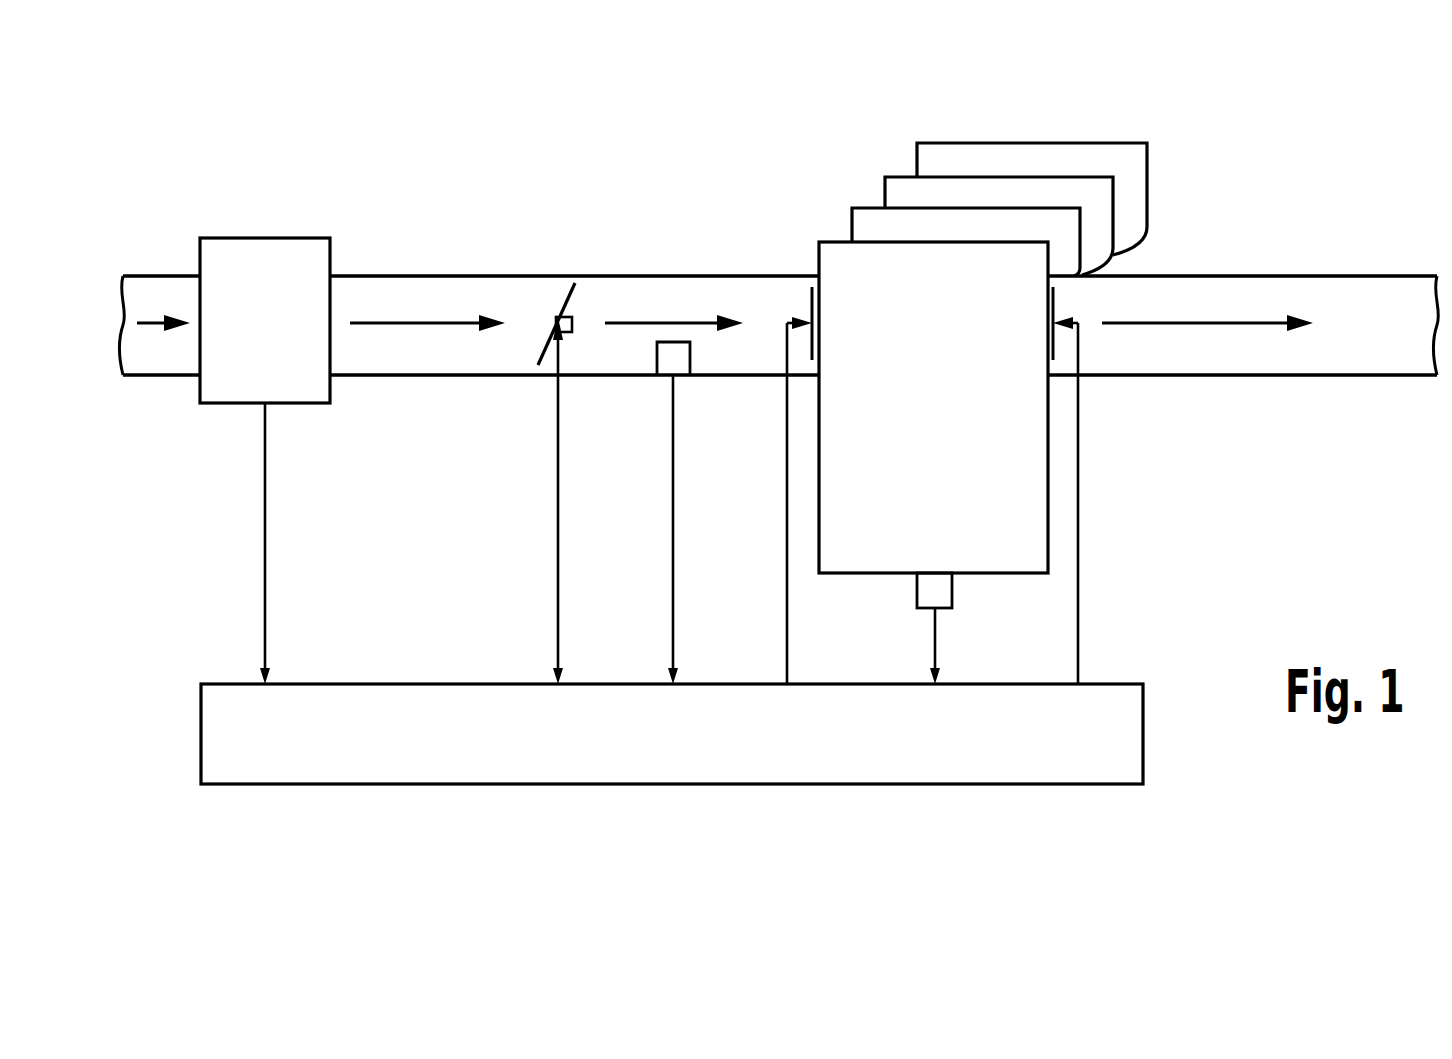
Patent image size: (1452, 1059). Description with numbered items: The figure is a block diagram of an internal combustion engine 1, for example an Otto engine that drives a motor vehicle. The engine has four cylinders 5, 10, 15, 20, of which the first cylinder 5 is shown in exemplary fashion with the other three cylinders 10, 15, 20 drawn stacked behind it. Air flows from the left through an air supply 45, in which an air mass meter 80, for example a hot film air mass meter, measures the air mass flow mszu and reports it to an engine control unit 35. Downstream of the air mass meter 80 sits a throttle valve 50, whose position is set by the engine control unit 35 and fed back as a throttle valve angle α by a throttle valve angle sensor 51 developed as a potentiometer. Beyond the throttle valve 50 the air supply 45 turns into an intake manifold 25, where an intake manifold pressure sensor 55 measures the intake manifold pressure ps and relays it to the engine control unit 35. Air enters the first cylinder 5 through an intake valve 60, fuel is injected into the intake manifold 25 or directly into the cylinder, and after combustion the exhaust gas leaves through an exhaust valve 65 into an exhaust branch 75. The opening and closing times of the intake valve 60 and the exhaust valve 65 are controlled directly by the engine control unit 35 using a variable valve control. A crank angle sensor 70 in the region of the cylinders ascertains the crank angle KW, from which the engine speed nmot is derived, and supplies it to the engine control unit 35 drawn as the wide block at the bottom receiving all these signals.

The internal combustion engine 1 is at (753, 168).
The first cylinder 5 is at (1030, 532).
The second cylinder 10 is at (975, 222).
The third cylinder 15 is at (1033, 192).
The fourth cylinder 20 is at (1088, 153).
The intake manifold 25 is at (655, 293).
The engine control unit 35 is at (651, 784).
The air supply 45 is at (158, 293).
The throttle valve 50 is at (565, 317).
The throttle valve angle sensor 51 is at (577, 315).
The intake manifold pressure sensor 55 is at (668, 375).
The intake valve 60 is at (812, 305).
The exhaust valve 65 is at (1053, 343).
The crank angle sensor 70 is at (952, 593).
The exhaust branch 75 is at (1235, 295).
The air mass meter 80 is at (257, 257).